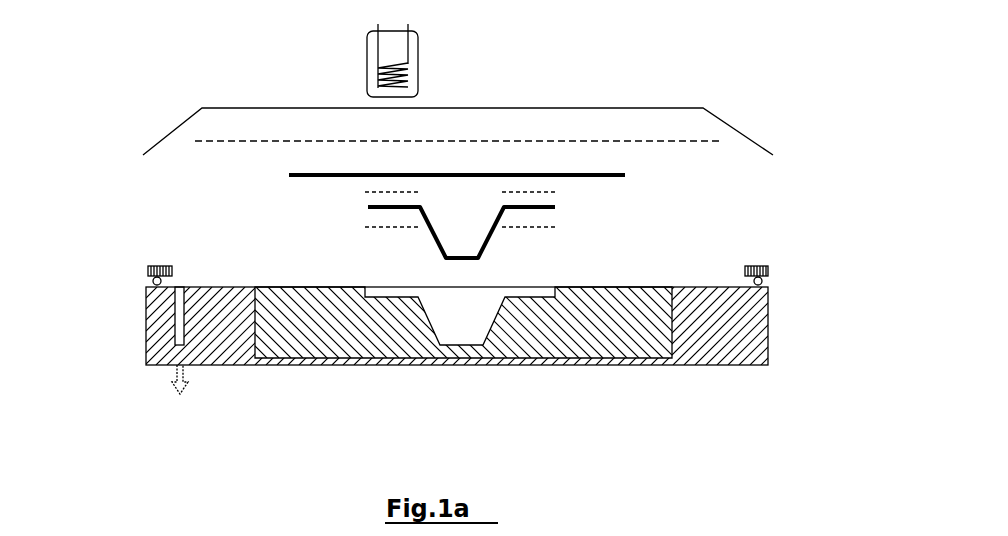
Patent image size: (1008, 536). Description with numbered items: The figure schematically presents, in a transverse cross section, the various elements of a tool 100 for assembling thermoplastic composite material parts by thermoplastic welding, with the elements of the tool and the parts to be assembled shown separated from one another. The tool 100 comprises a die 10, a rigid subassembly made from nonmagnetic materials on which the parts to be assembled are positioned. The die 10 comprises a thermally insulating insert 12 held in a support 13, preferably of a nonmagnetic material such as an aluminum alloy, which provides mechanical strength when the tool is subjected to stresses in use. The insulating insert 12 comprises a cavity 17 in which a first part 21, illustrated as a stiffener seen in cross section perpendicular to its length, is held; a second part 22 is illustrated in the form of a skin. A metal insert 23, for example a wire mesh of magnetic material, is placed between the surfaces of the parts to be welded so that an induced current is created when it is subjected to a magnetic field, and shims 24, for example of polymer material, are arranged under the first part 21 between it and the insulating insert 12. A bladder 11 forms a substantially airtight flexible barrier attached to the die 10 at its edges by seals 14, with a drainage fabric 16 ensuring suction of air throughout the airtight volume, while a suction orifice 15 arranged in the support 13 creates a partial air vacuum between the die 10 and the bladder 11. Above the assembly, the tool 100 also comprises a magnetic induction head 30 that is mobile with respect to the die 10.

The die 10 is at (746, 367).
The bladder 11 is at (603, 108).
The insulating insert 12 is at (628, 365).
The support 13 is at (770, 299).
The seals 14 is at (150, 279).
The suction orifice 15 is at (182, 322).
The drainage fabric 16 is at (660, 141).
The cavity 17 is at (450, 325).
The first part 21 is at (395, 207).
The second part 22 is at (340, 175).
The metal insert 23 is at (541, 192).
The shims 24 is at (557, 227).
The magnetic induction head 30 is at (415, 52).
The tool 100 is at (158, 405).